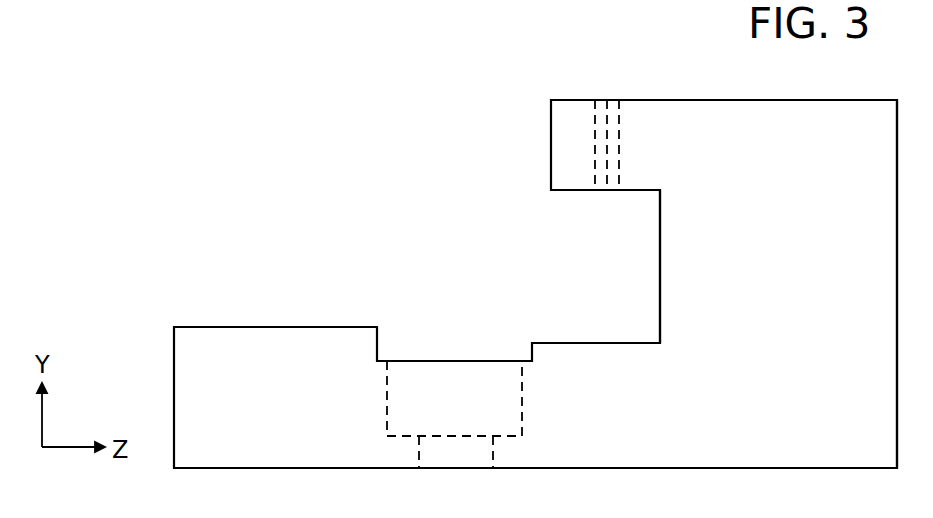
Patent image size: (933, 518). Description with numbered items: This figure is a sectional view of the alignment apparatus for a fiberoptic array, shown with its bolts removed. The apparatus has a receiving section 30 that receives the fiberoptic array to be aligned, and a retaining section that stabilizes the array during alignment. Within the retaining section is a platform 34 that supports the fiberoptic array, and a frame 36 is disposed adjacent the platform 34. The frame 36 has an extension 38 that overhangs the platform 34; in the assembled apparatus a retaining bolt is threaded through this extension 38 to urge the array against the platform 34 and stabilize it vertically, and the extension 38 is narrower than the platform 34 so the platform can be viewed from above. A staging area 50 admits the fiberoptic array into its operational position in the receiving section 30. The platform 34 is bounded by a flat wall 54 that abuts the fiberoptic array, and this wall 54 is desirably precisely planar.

The receiving section 30 is at (535, 234).
The platform 34 is at (606, 345).
The frame 36 is at (897, 157).
The extension 38 is at (578, 100).
The staging area 50 is at (256, 327).
The flat wall 54 is at (660, 268).